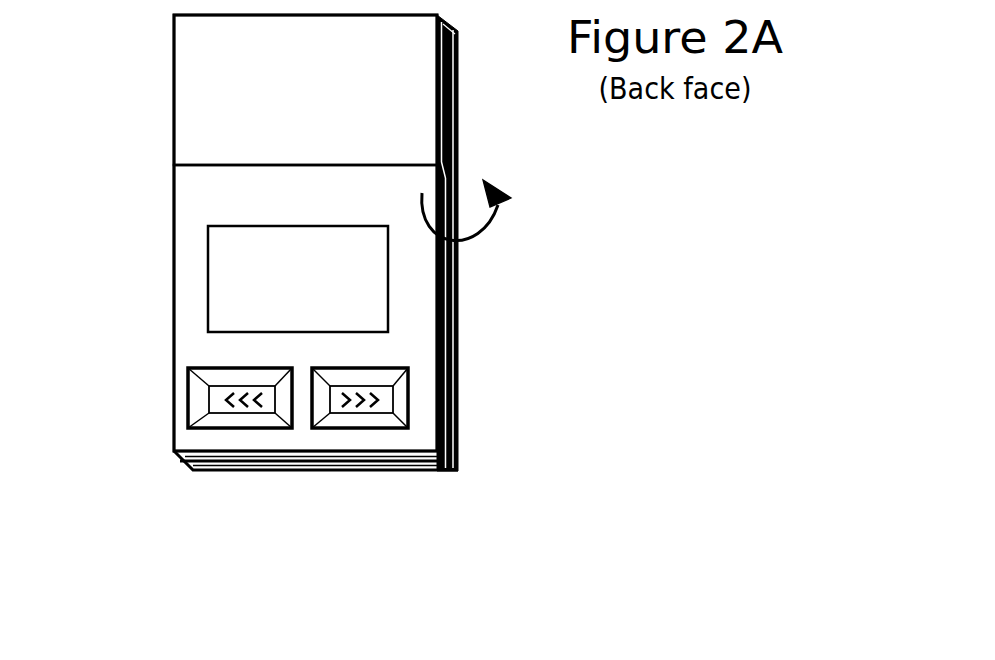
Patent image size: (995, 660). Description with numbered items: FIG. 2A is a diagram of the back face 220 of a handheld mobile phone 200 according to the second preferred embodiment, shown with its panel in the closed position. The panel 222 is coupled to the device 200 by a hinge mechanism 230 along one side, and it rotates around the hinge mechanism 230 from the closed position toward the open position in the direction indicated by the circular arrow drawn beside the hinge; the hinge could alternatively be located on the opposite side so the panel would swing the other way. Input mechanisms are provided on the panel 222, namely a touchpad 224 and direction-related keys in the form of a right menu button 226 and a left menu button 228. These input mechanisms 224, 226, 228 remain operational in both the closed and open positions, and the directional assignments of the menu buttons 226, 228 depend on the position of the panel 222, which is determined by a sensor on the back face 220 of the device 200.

The handheld mobile phone 200 is at (818, 622).
The back face 220 is at (305, 90).
The panel 222 is at (305, 308).
The touchpad 224 is at (298, 279).
The right menu button 226 is at (170, 395).
The left menu button 228 is at (432, 398).
The hinge mechanism 230 is at (476, 309).